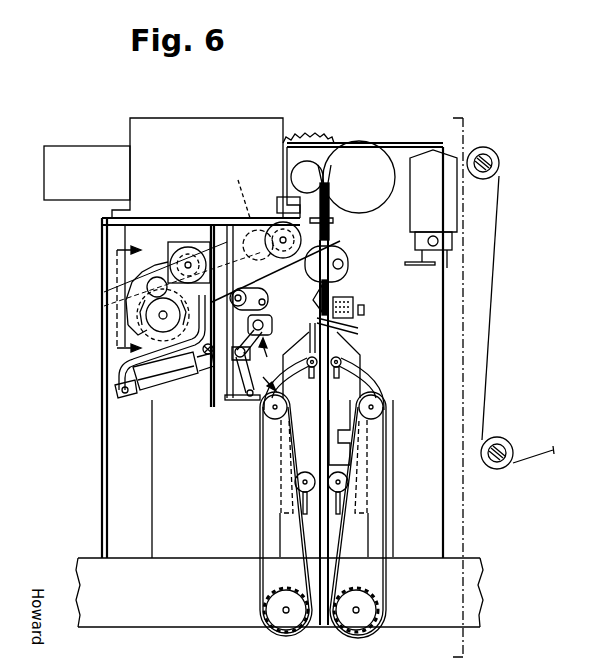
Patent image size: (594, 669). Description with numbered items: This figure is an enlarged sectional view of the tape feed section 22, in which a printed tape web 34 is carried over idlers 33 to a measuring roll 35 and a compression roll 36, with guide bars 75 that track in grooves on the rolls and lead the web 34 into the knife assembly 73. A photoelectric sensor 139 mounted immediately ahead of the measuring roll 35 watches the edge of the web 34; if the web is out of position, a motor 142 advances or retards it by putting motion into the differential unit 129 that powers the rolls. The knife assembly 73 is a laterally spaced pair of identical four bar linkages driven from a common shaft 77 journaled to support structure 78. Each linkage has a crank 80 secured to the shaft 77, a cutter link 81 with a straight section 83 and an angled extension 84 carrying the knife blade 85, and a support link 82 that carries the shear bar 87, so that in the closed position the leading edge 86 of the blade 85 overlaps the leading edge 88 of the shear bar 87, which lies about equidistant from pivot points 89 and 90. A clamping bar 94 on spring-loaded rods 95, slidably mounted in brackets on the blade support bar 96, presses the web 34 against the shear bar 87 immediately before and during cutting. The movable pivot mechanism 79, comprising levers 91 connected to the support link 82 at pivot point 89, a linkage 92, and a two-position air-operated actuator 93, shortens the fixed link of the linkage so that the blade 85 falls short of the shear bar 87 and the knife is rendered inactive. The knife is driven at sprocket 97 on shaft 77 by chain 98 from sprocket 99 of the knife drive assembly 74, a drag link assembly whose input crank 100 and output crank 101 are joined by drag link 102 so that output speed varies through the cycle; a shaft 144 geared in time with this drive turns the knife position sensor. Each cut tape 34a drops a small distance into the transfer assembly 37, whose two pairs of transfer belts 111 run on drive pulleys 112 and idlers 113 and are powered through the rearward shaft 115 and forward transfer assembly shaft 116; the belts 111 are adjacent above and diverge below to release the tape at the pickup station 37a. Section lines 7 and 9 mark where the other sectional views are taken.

The tape feed section 22 is at (378, 106).
The tape web 34 is at (390, 141).
The section line 7- 7 is at (453, 118).
The idlers 33 is at (500, 165).
The compression roll 36 is at (304, 165).
The measuring roll 35 is at (355, 150).
The guide bars 75 is at (329, 212).
The photoelectric sensor 139 is at (448, 200).
The differential unit 129 is at (188, 128).
The motor 142 is at (95, 155).
The common shaft 77 is at (232, 191).
The crank 80 is at (205, 228).
The sprocket 97 is at (247, 220).
The straight section 83 is at (286, 212).
The cutter link 81 is at (312, 252).
The pivot point 90 is at (344, 261).
The angled extension 84 is at (341, 280).
The shear bar 87 is at (403, 265).
The support link 82 is at (332, 279).
The leading edge 88 is at (313, 298).
The pivot point 89 is at (266, 303).
The clamping bar 94 is at (340, 297).
The rods 95 is at (356, 305).
The blade support bar 96 is at (365, 320).
The knife assembly 73 is at (396, 322).
The knife blade 85 is at (357, 322).
The leading edge 86 is at (338, 333).
The lever 91 is at (264, 322).
The movable pivot mechanism 79 is at (265, 364).
The support structure 78 is at (210, 355).
The linkage 92 is at (266, 402).
The actuator 93 is at (145, 396).
The shaft 144 is at (171, 479).
The idlers 113 is at (275, 413).
The transfer assembly 37 is at (248, 480).
The tape 34a is at (323, 450).
The transfer belts 111 is at (262, 528).
The pickup station 37a is at (318, 573).
The rearward shaft 115 is at (283, 612).
The drive pulleys 112 is at (288, 630).
The forward transfer assembly shaft 116 is at (360, 613).
The knife drive assembly 74 is at (88, 270).
The chain 98 is at (175, 240).
The drag link 102 is at (135, 277).
The output crank 101 is at (150, 289).
The sprocket 99 is at (132, 337).
The input crank 100 is at (123, 341).
The section line 9- 9 is at (125, 300).